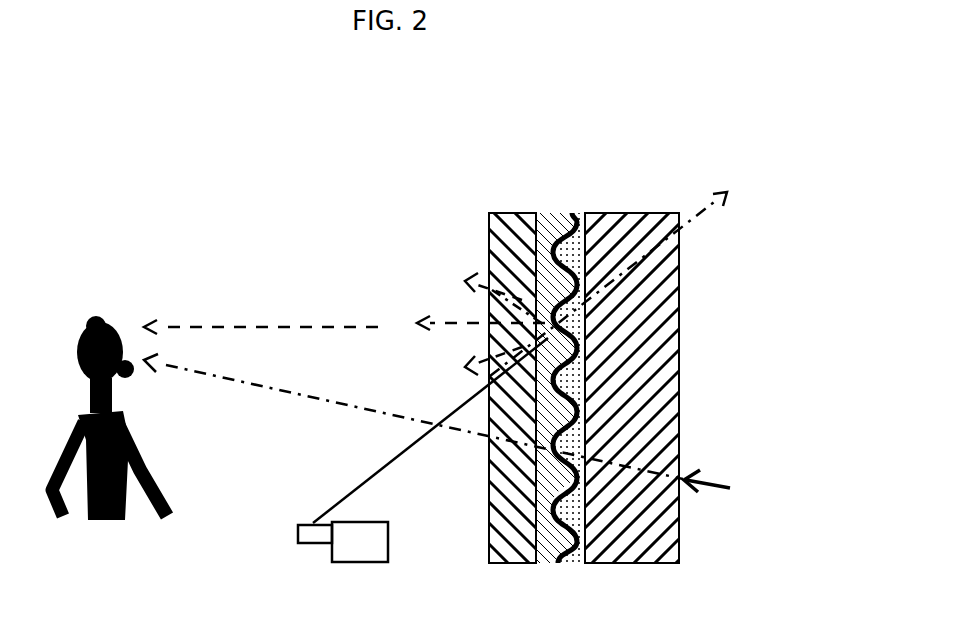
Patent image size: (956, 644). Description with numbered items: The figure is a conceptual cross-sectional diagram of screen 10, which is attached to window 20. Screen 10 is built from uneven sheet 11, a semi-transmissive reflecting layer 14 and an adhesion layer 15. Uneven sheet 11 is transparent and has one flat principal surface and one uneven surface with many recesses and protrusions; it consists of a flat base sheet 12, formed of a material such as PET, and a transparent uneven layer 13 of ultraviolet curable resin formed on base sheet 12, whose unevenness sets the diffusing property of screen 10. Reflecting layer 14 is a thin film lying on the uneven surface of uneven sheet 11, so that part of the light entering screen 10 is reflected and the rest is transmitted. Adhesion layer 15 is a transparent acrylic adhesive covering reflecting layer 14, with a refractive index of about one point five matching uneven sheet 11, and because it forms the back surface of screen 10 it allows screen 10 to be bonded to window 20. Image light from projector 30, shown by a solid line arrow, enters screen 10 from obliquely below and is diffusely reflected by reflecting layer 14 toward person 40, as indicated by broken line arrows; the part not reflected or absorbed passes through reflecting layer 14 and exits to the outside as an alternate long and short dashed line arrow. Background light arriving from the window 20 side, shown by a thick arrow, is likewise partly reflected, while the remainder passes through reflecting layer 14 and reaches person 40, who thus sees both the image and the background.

The screen 10 is at (554, 345).
The uneven sheet 11 is at (529, 362).
The base sheet 12 is at (505, 223).
The uneven layer 13 is at (542, 220).
The reflecting layer 14 is at (570, 213).
The adhesion layer 15 is at (584, 342).
The window 20 is at (640, 213).
The projector 30 is at (298, 533).
The person 40 is at (122, 433).